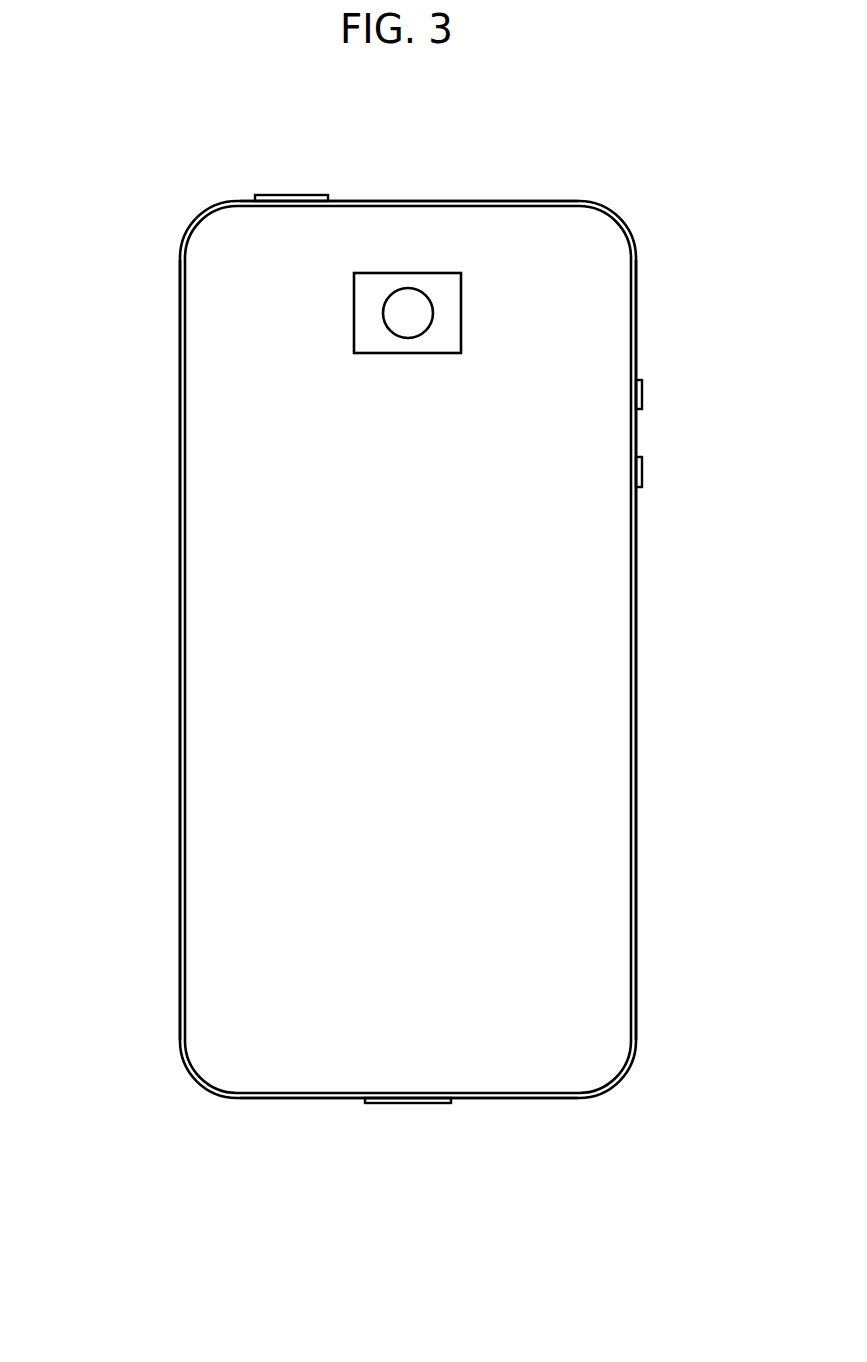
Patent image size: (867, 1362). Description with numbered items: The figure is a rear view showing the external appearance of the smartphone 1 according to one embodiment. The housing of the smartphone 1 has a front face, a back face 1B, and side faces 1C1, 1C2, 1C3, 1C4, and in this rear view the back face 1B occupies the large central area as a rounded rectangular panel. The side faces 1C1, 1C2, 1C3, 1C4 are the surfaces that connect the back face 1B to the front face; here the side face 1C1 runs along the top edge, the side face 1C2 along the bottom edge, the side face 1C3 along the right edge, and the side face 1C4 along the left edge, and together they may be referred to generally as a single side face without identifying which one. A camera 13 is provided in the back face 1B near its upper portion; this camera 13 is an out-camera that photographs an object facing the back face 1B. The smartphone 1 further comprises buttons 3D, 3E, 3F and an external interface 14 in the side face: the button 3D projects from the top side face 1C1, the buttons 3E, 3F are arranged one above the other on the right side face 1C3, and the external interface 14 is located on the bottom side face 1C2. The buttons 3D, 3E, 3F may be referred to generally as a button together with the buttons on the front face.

The smartphone 1 is at (684, 229).
The back face 1B is at (212, 518).
The side face 1C1 is at (510, 200).
The side face 1C2 is at (523, 1100).
The side face 1C3 is at (636, 746).
The side face 1C4 is at (180, 667).
The button 3D is at (288, 195).
The button 3E is at (642, 393).
The button 3F is at (642, 470).
The camera 13 is at (411, 303).
The external interface 14 is at (400, 1105).